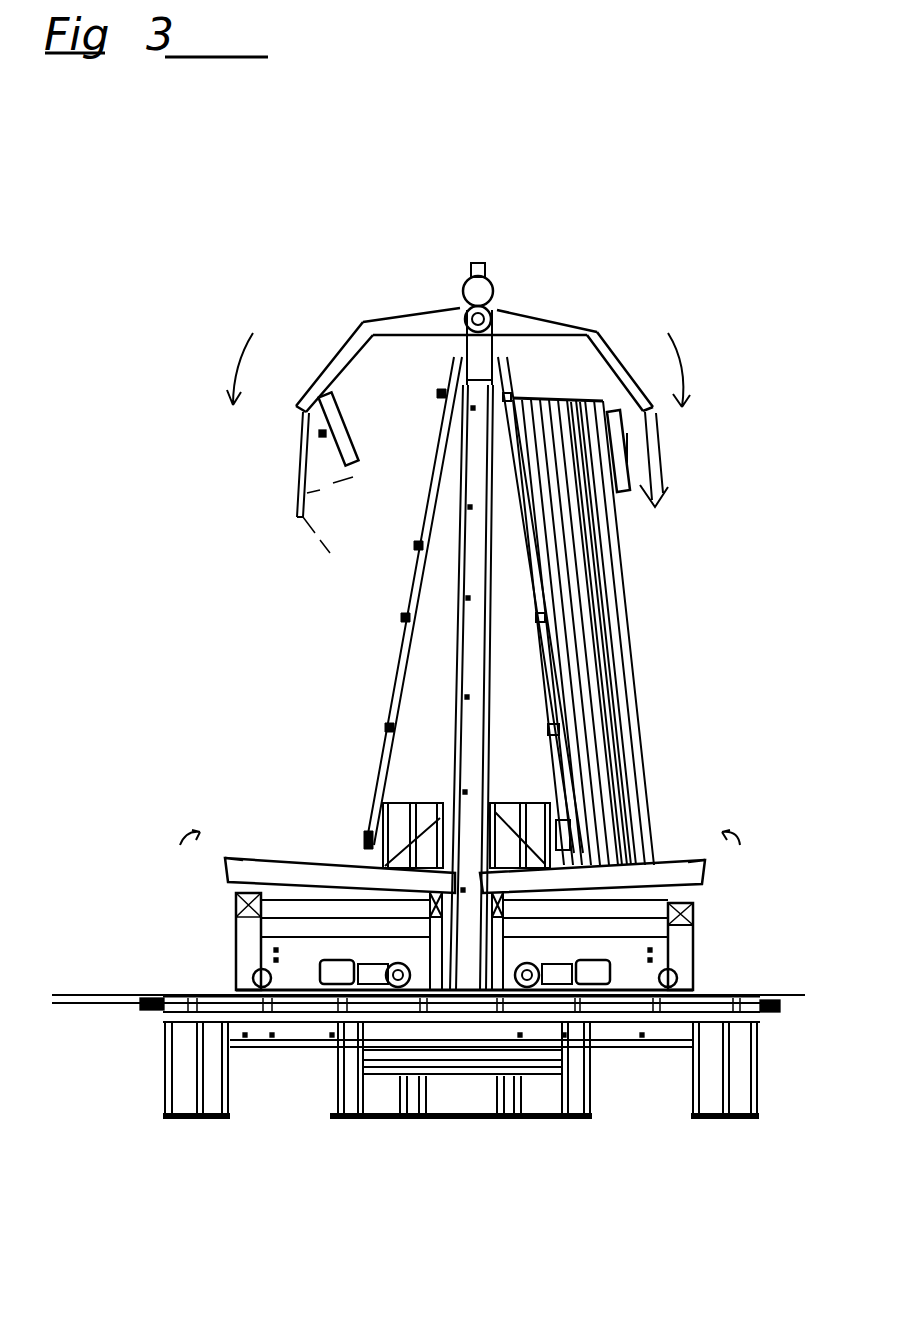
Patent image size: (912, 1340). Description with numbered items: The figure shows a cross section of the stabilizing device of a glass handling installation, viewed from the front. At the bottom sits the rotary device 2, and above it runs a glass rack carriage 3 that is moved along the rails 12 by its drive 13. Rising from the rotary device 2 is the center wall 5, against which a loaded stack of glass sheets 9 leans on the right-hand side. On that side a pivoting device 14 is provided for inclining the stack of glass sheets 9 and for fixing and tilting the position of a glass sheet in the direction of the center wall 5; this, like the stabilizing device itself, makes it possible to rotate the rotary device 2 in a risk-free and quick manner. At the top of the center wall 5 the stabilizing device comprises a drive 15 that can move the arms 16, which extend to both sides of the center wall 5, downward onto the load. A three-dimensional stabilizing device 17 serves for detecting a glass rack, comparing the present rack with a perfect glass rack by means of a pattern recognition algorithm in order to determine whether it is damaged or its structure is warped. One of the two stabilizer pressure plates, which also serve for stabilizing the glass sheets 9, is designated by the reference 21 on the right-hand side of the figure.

The rotary device 2 is at (493, 1120).
The glass rack carriage 3 is at (234, 940).
The center wall 5 is at (470, 657).
The stack of glass sheets 9 is at (568, 560).
The rails 12 is at (140, 1000).
The drive 13 is at (372, 973).
The pivoting device 14 is at (680, 915).
The drive 15 is at (463, 282).
The arms 16 is at (350, 340).
The 3D stabilizing device 17 is at (287, 503).
The stabilizer pressure plate 21 is at (618, 465).